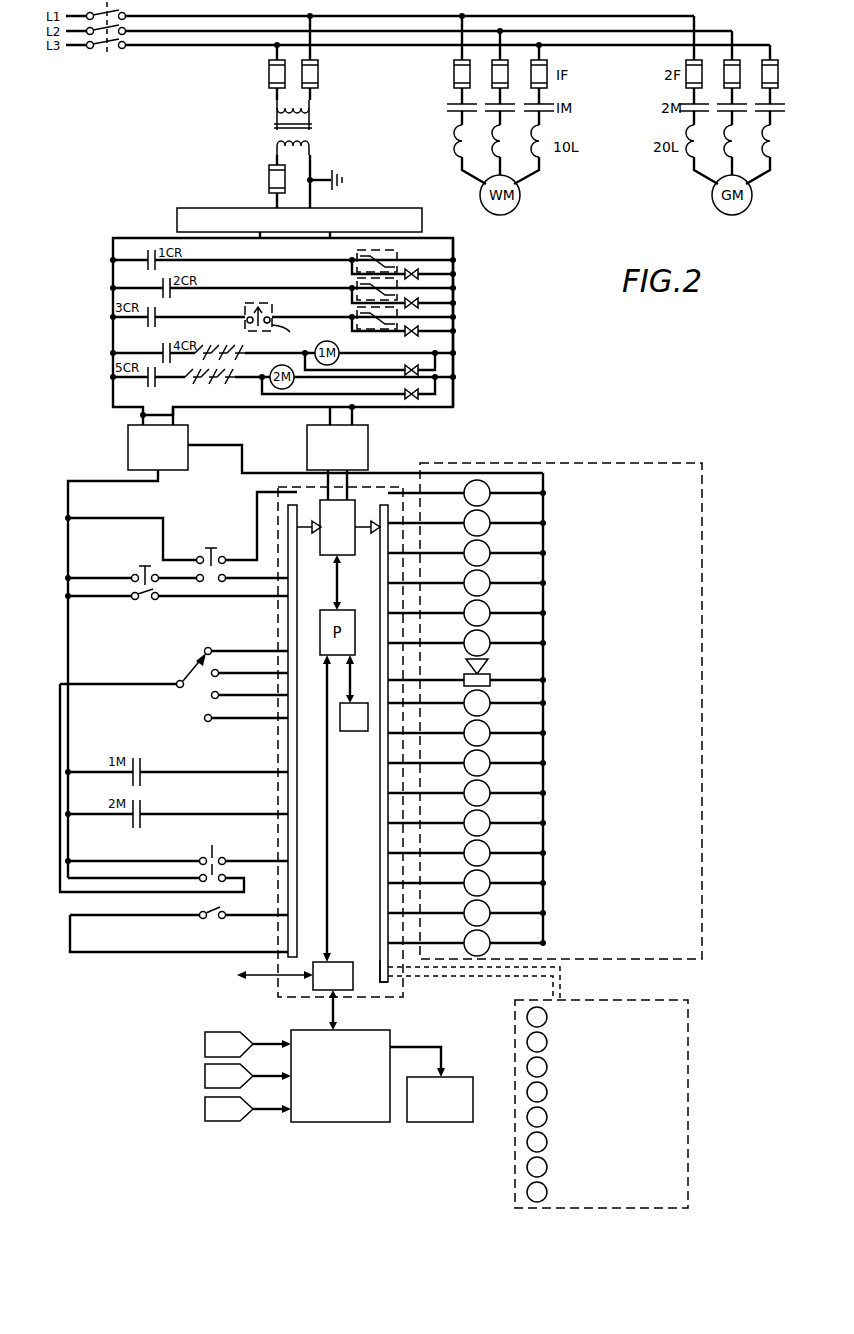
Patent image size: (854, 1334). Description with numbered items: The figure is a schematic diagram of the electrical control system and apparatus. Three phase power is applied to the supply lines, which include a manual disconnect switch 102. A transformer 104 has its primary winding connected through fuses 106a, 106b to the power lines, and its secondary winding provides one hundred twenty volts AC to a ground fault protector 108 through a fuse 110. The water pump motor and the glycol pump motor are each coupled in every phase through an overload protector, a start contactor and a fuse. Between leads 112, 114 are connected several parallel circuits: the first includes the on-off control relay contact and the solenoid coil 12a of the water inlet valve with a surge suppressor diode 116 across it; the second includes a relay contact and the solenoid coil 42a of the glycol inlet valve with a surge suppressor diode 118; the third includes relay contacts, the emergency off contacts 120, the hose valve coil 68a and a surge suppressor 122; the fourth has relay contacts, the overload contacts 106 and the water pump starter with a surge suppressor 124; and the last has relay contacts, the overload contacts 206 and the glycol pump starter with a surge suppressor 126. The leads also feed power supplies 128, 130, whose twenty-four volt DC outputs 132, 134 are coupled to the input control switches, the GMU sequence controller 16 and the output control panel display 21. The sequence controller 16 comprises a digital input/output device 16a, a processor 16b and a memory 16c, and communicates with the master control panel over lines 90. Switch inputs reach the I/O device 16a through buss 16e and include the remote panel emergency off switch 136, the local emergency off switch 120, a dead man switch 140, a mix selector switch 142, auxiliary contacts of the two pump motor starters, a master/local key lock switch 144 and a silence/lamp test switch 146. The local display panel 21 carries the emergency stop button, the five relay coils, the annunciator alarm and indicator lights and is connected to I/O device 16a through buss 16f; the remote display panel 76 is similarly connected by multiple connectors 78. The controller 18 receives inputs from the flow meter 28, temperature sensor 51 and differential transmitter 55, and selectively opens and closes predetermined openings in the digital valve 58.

The manual disconnect switch 102 is at (107, 50).
The fuse 106a is at (269, 74).
The fuse 106b is at (318, 74).
The transformer 104 is at (275, 125).
The fuse 110 is at (269, 181).
The ground fault protector 108 is at (422, 222).
The lead 112 is at (113, 238).
The lead 114 is at (453, 250).
The solenoid coil of water inlet valve 12a is at (357, 253).
The solenoid coil of glycol inlet valve 42a is at (357, 282).
The hose valve coil 68a is at (357, 311).
The surge suppressor diode 116 is at (420, 272).
The surge suppressor diode 118 is at (420, 303).
The surge suppressor 122 is at (420, 331).
The surge suppressor 124 is at (420, 370).
The surge suppressor 126 is at (420, 394).
The emergency off contacts 120 is at (245, 312).
The overload contacts 106 is at (220, 344).
The overload contacts 206 is at (210, 387).
The power supply 128 is at (128, 446).
The power supply 130 is at (368, 438).
The power supply output 132 is at (242, 462).
The power supply output 134 is at (345, 497).
The remote panel emergency off switch 136 is at (215, 550).
The dead man switch 140 is at (84, 590).
The mix selector switch 142 is at (178, 681).
The master/local key lock switch 144 is at (228, 873).
The silence/lamp test switch 146 is at (207, 912).
The GMU sequence controller 16 is at (300, 997).
The digital input/output device 16a is at (347, 557).
The processor 16b is at (325, 609).
The memory 16c is at (360, 703).
The buss 16e is at (292, 951).
The buss 16f is at (386, 985).
The output control panel display 21 is at (535, 462).
The lines to master control panel 90 is at (232, 987).
The multiple connectors 78 is at (565, 974).
The remote display panel 76 is at (650, 1000).
The controller 18 is at (335, 1122).
The digital valve 58 is at (450, 1075).
The flow meter 28 is at (205, 1044).
The temperature sensor 51 is at (205, 1076).
The differential transmitter 55 is at (205, 1109).